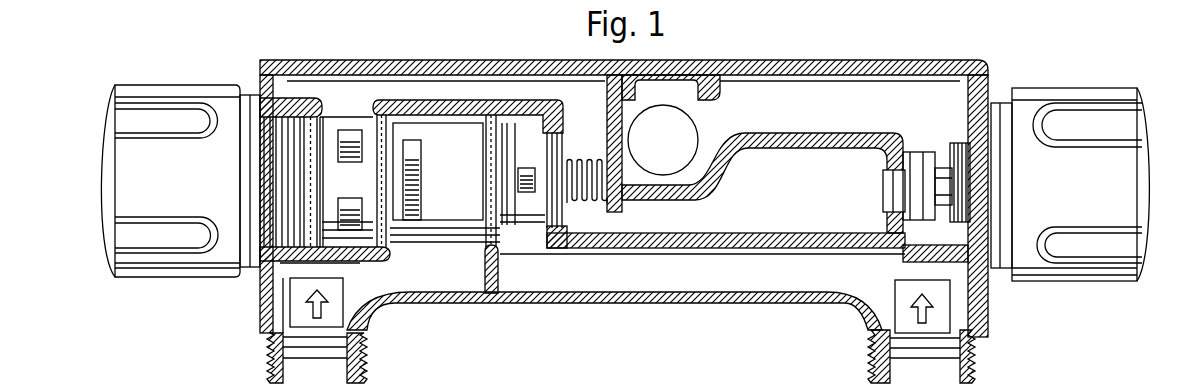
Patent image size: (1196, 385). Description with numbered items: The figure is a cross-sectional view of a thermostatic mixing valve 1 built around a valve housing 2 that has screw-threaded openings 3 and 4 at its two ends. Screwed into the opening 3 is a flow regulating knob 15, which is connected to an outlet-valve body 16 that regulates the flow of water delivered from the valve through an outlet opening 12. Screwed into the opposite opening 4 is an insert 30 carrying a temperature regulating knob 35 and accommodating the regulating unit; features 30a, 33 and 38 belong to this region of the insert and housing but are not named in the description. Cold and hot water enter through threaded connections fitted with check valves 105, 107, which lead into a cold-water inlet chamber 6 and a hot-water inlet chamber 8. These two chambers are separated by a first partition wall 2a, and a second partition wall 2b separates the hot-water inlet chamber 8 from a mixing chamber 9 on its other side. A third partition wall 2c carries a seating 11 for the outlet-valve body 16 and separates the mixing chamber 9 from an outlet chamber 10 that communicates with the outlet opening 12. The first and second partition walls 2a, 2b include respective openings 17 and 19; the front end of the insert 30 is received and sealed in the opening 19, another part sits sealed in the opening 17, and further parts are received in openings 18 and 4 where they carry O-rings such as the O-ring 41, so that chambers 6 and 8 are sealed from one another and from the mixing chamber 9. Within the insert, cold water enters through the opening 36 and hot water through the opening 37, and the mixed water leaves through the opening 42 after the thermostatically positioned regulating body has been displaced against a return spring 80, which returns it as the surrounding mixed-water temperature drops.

The mixing valve 1 is at (717, 57).
The valve housing 2 is at (783, 63).
The first partition wall 2a is at (494, 302).
The second partition wall 2b is at (793, 232).
The third partition wall 2c is at (838, 133).
The screw-threaded opening 3 is at (982, 68).
The screw-threaded opening 4 is at (340, 114).
The cold-water inlet chamber 6 is at (441, 276).
The hot-water inlet chamber 8 is at (706, 286).
The mixing chamber 9 is at (800, 191).
The outlet chamber 10 is at (790, 119).
The seating 11 is at (884, 193).
The outlet opening 12 is at (674, 155).
The flow regulating knob 15 is at (1038, 98).
The outlet-valve body 16 is at (913, 152).
The opening 17 is at (455, 218).
The opening 18 is at (362, 256).
The opening 19 is at (527, 232).
The insert 30 is at (362, 115).
The thread 30a is at (278, 125).
The valve body 33 is at (448, 140).
The temperature regulating knob 35 is at (170, 115).
The opening 36 is at (408, 147).
The opening 37 is at (527, 160).
The valve seat 38 is at (533, 133).
The O-ring 41 is at (387, 217).
The opening 42 is at (300, 153).
The return spring 80 is at (578, 163).
The check valve 105 is at (290, 306).
The check valve 107 is at (932, 318).